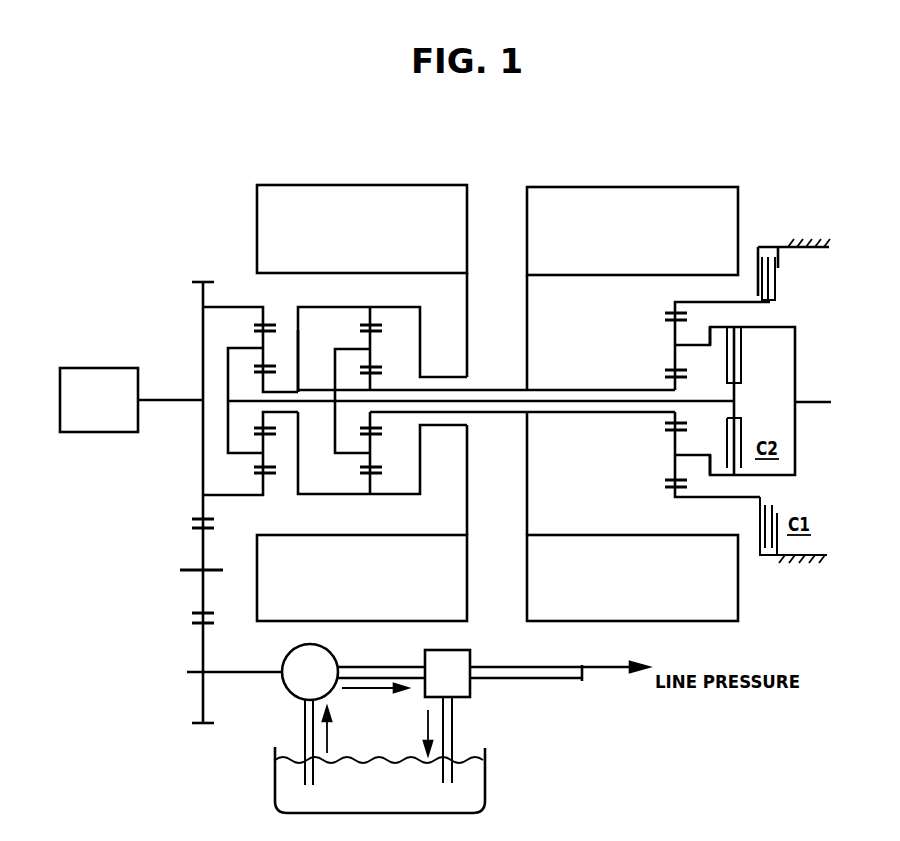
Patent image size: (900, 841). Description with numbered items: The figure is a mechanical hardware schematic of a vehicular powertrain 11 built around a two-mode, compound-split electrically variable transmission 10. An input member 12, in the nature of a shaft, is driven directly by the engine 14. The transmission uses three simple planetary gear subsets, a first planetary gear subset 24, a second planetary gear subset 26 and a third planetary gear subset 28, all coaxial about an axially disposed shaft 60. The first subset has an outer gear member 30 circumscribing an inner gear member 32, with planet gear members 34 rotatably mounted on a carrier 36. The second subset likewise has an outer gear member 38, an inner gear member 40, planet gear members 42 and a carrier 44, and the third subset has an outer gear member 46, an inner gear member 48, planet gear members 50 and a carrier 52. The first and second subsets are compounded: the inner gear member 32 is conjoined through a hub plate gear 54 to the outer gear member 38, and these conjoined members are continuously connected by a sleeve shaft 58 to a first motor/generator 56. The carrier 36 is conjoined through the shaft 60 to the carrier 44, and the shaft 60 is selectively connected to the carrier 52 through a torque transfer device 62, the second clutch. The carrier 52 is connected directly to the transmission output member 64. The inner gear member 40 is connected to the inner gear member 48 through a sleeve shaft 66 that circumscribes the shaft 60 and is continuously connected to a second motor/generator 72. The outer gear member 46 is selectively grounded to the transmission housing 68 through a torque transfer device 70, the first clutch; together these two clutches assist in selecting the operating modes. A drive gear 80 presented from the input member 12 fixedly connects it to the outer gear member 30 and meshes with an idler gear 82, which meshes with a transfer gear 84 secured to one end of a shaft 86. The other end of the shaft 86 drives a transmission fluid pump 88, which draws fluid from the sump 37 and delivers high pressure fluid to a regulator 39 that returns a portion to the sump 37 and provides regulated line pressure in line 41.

The electrically variable transmission 10 is at (490, 178).
The vehicular powertrain 11 is at (152, 289).
The input member 12 is at (172, 398).
The engine 14 is at (81, 370).
The first planetary gear subset 24 is at (240, 304).
The second planetary gear subset 26 is at (385, 329).
The third planetary gear subset 28 is at (643, 336).
The outer gear member 30 is at (265, 318).
The inner gear member 32 is at (272, 378).
The planet gear members 34 is at (262, 346).
The carrier 36 is at (228, 433).
The sump 37 is at (486, 780).
The outer gear member 38 is at (363, 326).
The regulator 39 is at (472, 692).
The inner gear member 40 is at (362, 427).
The line 41 is at (581, 681).
The planet gear members 42 is at (374, 354).
The carrier 44 is at (333, 437).
The outer gear member 46 is at (670, 312).
The inner gear member 48 is at (680, 420).
The planet gear members 50 is at (672, 358).
The carrier 52 is at (776, 326).
The hub plate gear 54 is at (301, 338).
The first motor/generator 56 is at (287, 195).
The sleeve shaft 58 is at (448, 372).
The shaft 60 is at (494, 400).
The torque transfer device 62 is at (743, 348).
The transmission output member 64 is at (813, 400).
The sleeve shaft 66 is at (543, 388).
The transmission housing 68 is at (793, 242).
The torque transfer device 70 is at (781, 268).
The second motor/generator 72 is at (699, 198).
The drive gear 80 is at (198, 463).
The idler gear 82 is at (202, 589).
The transfer gear 84 is at (202, 645).
The shaft 86 is at (233, 675).
The transmission fluid pump 88 is at (320, 662).